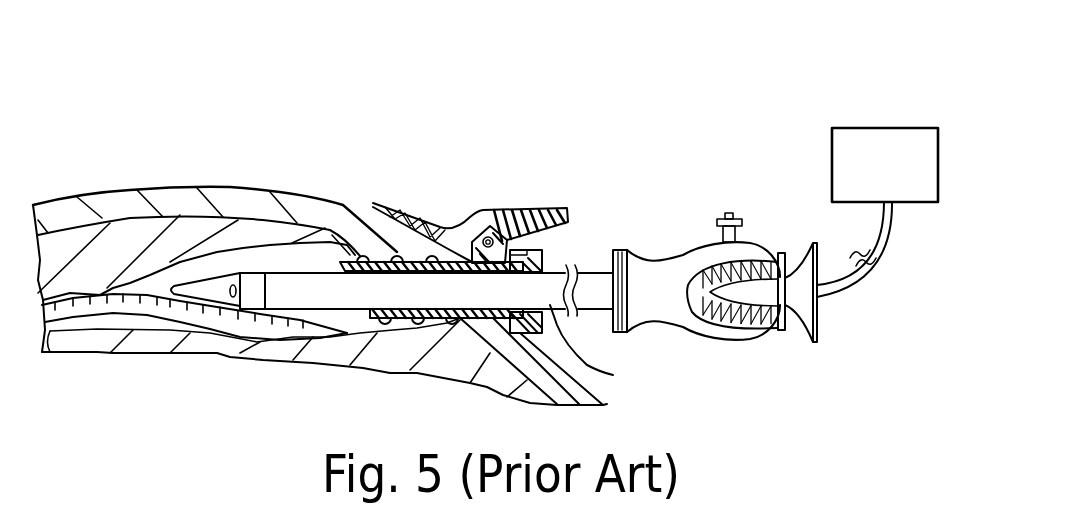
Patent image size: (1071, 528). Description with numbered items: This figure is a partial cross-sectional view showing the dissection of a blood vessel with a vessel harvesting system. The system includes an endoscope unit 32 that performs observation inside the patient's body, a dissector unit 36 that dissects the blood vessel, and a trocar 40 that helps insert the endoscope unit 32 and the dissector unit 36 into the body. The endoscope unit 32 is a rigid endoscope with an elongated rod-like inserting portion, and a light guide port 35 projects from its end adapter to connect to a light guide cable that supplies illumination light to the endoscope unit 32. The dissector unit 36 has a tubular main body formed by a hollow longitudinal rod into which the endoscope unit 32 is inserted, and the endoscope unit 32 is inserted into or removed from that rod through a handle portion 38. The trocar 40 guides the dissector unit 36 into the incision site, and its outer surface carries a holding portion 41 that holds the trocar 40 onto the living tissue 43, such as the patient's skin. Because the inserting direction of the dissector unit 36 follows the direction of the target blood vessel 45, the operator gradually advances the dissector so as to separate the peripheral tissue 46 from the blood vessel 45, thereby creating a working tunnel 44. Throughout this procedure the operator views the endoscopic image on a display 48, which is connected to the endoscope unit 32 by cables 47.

The endoscope unit 32 is at (793, 353).
The light guide port 35 is at (738, 232).
The dissector unit 36 is at (662, 241).
The handle portion 38 is at (232, 298).
The trocar 40 is at (467, 318).
The holding portion 41 is at (523, 189).
The living tissue 43 is at (238, 175).
The working tunnel 44 is at (309, 260).
The target blood vessel 45 is at (165, 312).
The peripheral tissue 46 is at (167, 262).
The cables 47 is at (860, 282).
The display 48 is at (832, 142).